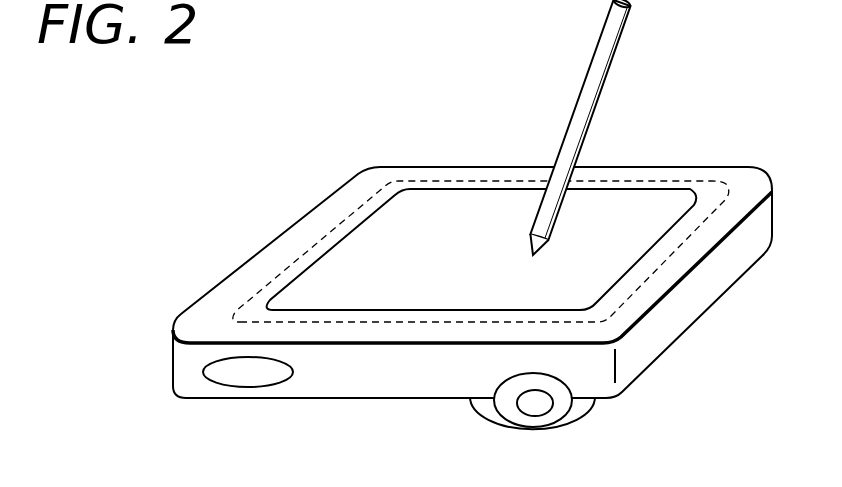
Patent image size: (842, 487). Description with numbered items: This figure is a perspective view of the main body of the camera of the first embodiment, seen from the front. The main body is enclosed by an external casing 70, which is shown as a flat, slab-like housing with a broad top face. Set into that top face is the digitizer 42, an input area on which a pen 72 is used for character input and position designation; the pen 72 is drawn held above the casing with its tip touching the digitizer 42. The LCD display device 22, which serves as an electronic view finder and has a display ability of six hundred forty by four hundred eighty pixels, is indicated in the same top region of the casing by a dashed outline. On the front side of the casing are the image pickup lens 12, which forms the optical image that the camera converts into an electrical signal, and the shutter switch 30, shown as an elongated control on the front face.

The image pickup lens 12 is at (540, 402).
The LCD display device 22 is at (313, 237).
The shutter switch 30 is at (248, 375).
The digitizer 42 is at (323, 287).
The external casing 70 is at (475, 160).
The pen 72 is at (615, 71).